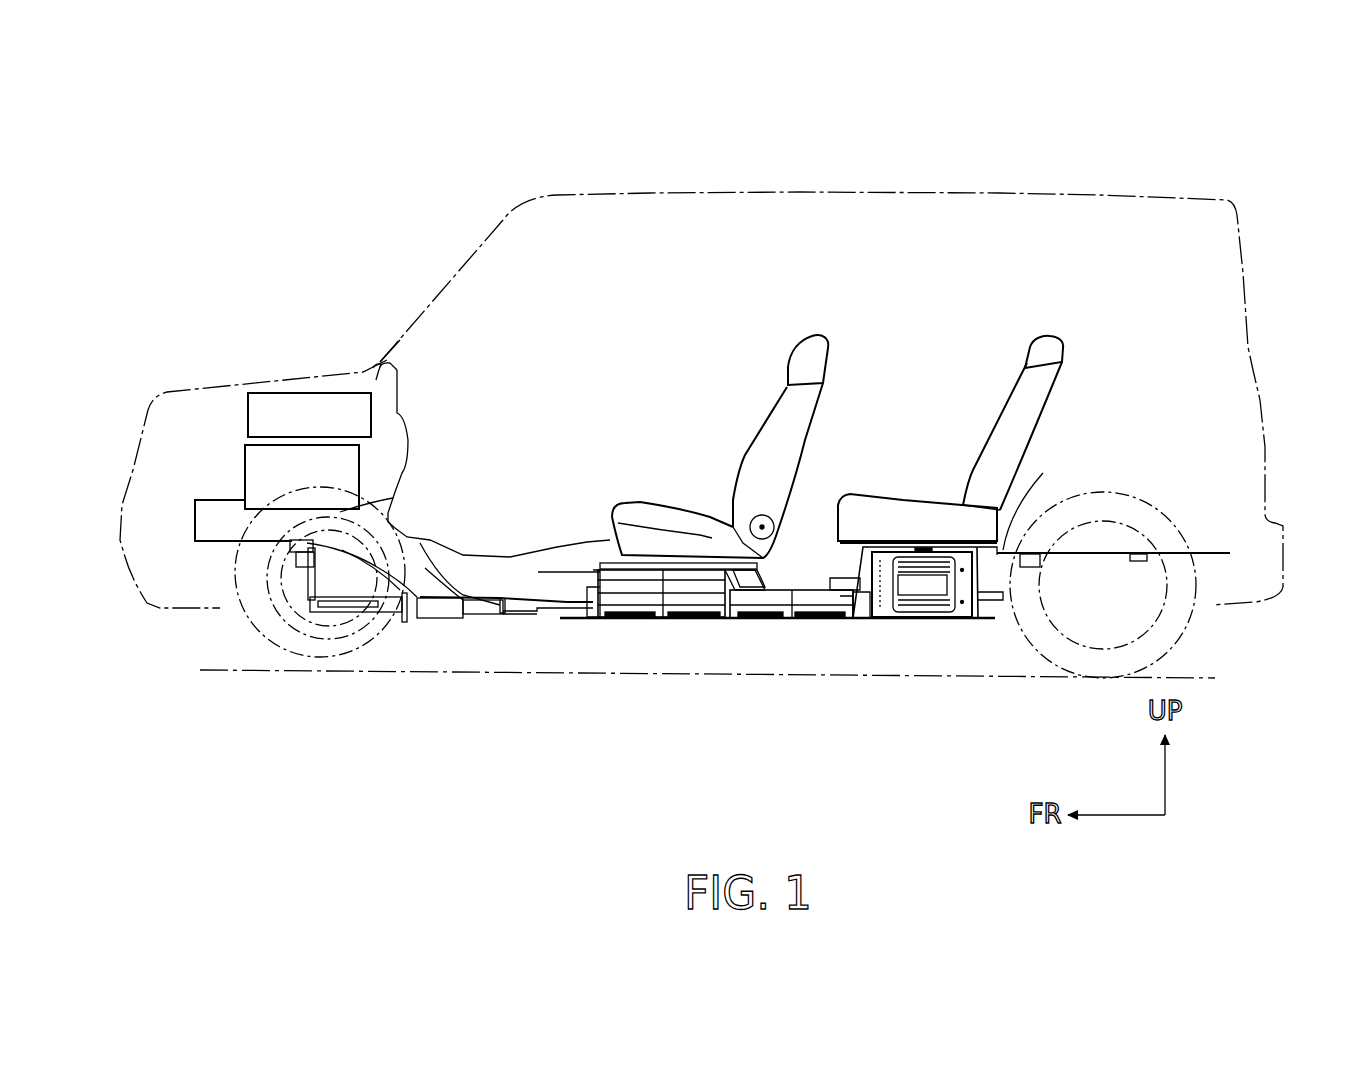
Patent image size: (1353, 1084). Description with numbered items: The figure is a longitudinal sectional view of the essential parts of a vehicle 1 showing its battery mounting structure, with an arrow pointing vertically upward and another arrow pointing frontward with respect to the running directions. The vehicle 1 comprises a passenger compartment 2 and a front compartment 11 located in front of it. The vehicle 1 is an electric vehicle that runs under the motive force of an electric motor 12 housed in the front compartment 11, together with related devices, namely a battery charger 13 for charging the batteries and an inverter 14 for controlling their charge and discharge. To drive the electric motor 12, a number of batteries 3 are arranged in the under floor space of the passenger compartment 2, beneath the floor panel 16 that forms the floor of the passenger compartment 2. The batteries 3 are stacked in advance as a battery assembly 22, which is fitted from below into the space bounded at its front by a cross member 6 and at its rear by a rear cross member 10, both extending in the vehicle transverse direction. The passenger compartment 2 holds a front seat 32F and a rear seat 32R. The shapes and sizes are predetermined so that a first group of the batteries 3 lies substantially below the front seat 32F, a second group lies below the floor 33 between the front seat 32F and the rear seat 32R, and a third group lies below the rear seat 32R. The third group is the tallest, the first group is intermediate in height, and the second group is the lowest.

The vehicle 1 is at (1014, 190).
The passenger compartment 2 is at (719, 311).
The batteries 3 is at (622, 606).
The cross member 6 is at (573, 600).
The rear cross member 10 is at (1099, 567).
The front compartment 11 is at (218, 412).
The electric motor 12 is at (300, 625).
The battery charger 13 is at (308, 393).
The inverter 14 is at (245, 476).
The floor panel 16 is at (603, 563).
The battery assembly 22 is at (570, 630).
The front seat 32F is at (757, 420).
The rear seat 32R is at (990, 420).
The floor 33 is at (795, 583).